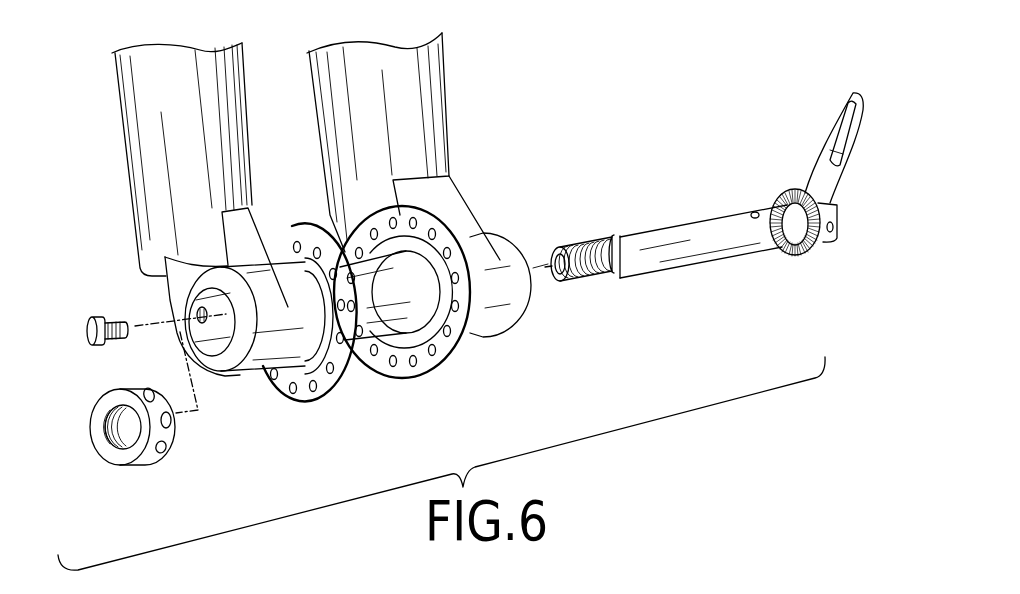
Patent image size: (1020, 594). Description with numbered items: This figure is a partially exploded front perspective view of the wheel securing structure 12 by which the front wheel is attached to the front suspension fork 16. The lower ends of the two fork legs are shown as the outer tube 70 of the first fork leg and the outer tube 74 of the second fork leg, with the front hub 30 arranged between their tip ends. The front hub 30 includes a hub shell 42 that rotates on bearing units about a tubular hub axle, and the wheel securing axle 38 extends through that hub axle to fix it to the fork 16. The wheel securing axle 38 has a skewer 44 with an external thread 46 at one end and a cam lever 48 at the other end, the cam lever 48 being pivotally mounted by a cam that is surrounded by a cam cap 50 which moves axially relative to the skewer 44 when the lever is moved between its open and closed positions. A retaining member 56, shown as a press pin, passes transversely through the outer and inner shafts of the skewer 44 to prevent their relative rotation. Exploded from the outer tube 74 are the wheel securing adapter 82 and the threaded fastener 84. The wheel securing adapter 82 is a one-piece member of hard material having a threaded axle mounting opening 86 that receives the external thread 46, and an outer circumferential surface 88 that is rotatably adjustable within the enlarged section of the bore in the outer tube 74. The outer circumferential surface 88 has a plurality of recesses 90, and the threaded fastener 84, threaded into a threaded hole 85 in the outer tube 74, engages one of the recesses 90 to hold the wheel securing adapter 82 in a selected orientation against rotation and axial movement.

The wheel securing structure 12 is at (127, 487).
The front suspension fork 16 is at (458, 70).
The front hub 30 is at (303, 182).
The wheel securing axle 38 is at (678, 182).
The hub shell 42 is at (376, 314).
The skewer 44 is at (700, 250).
The external thread 46 is at (598, 250).
The cam lever 48 is at (825, 163).
The cam cap 50 is at (829, 237).
The retaining member 56 is at (757, 211).
The outer tube 70 is at (447, 120).
The outer tube 74 is at (128, 181).
The wheel securing adapter 82 is at (142, 442).
The threaded fastener 84 is at (106, 312).
The threaded hole 85 is at (207, 317).
The threaded axle mounting opening 86 is at (108, 416).
The outer circumferential surface 88 is at (172, 432).
The recesses 90 is at (165, 452).